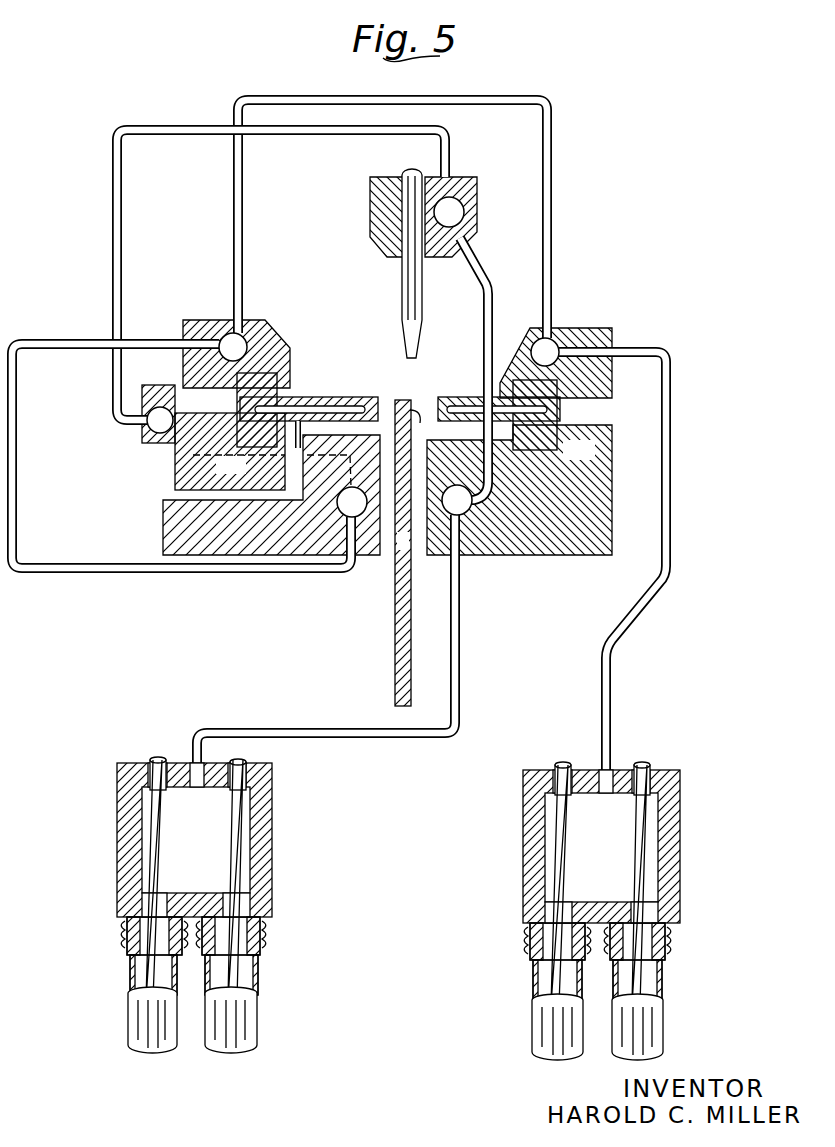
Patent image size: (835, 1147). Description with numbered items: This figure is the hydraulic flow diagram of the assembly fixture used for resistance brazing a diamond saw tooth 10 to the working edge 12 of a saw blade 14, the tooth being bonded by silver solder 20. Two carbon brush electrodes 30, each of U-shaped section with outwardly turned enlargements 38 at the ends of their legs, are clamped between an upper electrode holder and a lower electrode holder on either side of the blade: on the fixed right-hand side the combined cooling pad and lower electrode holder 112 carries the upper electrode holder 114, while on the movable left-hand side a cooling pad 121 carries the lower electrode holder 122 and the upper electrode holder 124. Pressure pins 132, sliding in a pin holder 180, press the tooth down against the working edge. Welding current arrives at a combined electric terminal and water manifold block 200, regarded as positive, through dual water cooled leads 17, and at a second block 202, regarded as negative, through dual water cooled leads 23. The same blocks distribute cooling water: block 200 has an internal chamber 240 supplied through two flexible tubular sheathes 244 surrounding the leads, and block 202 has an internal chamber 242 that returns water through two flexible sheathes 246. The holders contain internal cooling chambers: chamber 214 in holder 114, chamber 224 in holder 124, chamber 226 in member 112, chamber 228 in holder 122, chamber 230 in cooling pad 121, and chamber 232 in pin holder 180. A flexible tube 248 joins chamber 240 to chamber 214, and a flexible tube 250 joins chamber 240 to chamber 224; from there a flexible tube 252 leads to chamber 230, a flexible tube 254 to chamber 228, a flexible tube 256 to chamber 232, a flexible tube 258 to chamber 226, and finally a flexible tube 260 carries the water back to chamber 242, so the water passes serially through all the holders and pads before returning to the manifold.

The diamond saw tooth 10 is at (414, 398).
The working edge 12 is at (429, 430).
The saw blade 14 is at (392, 641).
The dual water cooled leads 17 is at (640, 985).
The silver solder 20 is at (395, 407).
The dual water cooled leads 23 is at (232, 985).
The electrode 30 is at (339, 394).
The enlargements 38 is at (236, 406).
The combined cooling pad and lower electrode holder 112 is at (533, 560).
The upper electrode holder 114 is at (604, 330).
The cooling pad 121 is at (176, 557).
The lower electrode holder 122 is at (150, 384).
The upper electrode holder 124 is at (205, 316).
The pressure pin 132 is at (420, 334).
The pin holder 180 is at (367, 206).
The combined electric terminal and water manifold block 200 is at (680, 908).
The combined electric terminal and water manifold block 202 is at (272, 893).
The internal cooling chamber 214 is at (557, 362).
The internal cooling chamber 224 is at (250, 352).
The internal cooling chamber 226 is at (463, 556).
The internal cooling chamber 228 is at (152, 414).
The internal cooling chamber 230 is at (368, 556).
The internal cooling chamber 232 is at (465, 212).
The internal chamber 240 is at (552, 870).
The internal chamber 242 is at (147, 860).
The flexible tubular sheathes 244 is at (560, 1052).
The flexible sheathes 246 is at (178, 1040).
The flexible tube 248 is at (672, 578).
The flexible tube 250 is at (476, 100).
The flexible tube 252 is at (20, 530).
The flexible tube 254 is at (299, 445).
The flexible tube 256 is at (186, 125).
The flexible tube 258 is at (484, 380).
The flexible tube 260 is at (462, 657).